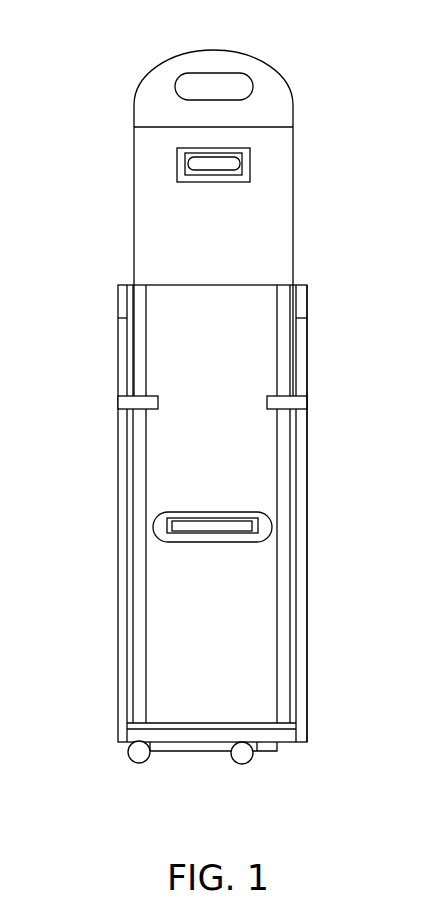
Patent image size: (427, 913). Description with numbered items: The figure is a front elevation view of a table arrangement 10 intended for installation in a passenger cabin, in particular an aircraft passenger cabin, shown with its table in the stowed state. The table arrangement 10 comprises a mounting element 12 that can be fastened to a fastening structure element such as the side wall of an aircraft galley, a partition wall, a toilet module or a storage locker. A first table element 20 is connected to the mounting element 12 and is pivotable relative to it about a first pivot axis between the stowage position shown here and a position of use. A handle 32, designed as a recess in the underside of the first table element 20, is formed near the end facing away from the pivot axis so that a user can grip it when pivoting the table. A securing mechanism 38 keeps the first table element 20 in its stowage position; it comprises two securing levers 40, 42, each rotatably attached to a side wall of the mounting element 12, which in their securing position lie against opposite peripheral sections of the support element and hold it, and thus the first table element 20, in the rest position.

The table arrangement 10 is at (204, 386).
The mounting element 12 is at (308, 428).
The first table element 20 is at (244, 202).
The handle 32 is at (237, 88).
The securing mechanism 38 is at (194, 524).
The securing lever 40 is at (146, 383).
The securing lever 42 is at (278, 388).